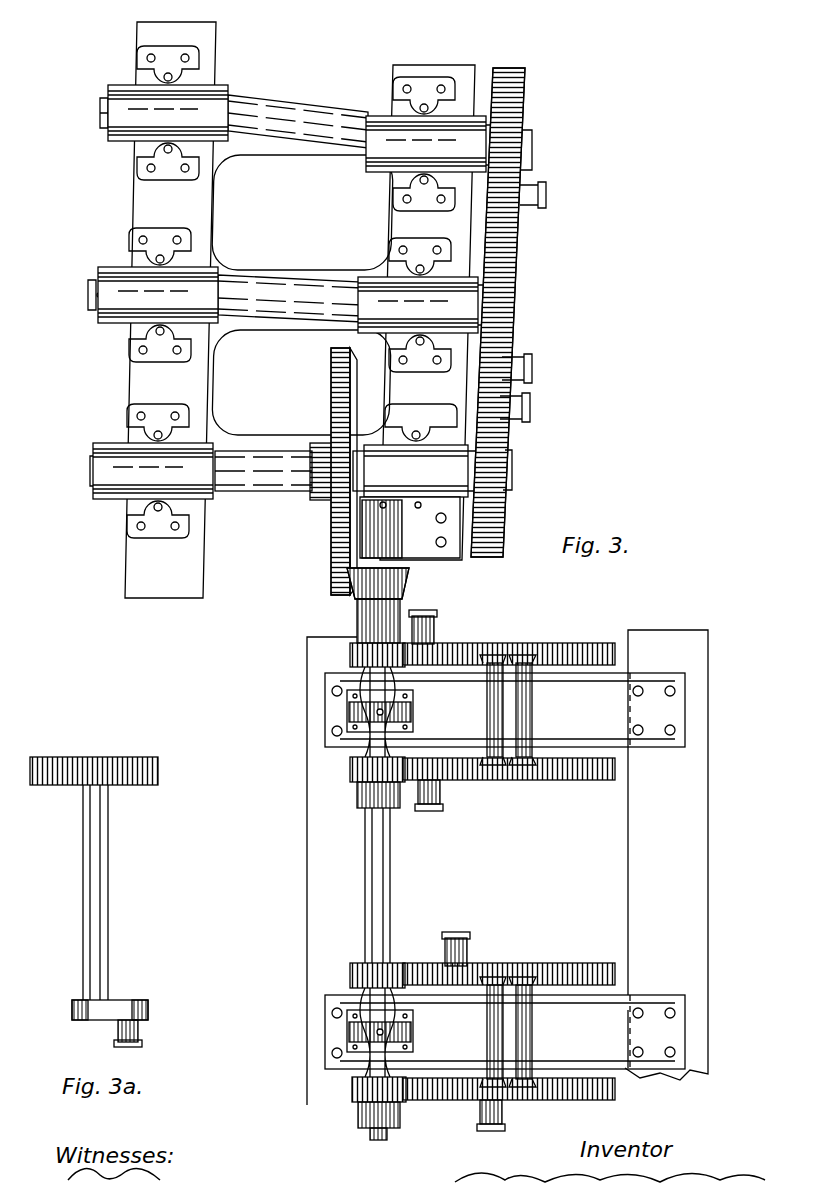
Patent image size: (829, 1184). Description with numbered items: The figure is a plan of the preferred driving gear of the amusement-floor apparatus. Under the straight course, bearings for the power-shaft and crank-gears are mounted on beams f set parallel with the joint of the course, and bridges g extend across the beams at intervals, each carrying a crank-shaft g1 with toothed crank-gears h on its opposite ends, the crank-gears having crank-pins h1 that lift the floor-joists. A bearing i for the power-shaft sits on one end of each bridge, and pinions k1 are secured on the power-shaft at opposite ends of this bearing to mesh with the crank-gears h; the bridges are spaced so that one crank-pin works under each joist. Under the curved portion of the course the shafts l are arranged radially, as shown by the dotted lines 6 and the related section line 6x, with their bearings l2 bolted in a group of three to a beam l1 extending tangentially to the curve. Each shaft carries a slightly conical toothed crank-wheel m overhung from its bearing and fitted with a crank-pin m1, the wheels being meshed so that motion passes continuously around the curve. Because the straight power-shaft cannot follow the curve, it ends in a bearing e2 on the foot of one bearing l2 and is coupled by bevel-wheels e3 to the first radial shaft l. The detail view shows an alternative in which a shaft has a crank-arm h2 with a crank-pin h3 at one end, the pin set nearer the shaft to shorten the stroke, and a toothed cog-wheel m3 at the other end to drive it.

In FIG. 3, the section line 6— 6 is at (728, 472).
In FIG. 3, the section line 6x- 6x is at (750, 838).
In FIG. 3, the shaft l is at (310, 115).
In FIG. 3A, the shaft l is at (110, 860).
In FIG. 3, the beam l1 is at (392, 230).
In FIG. 3, the bearing l2 is at (426, 108).
In FIG. 3, the toothed crank-wheel m is at (524, 88).
In FIG. 3, the crank-pin m1 is at (546, 198).
In FIG. 3A, the toothed cog-wheel m3 is at (94, 755).
In FIG. 3, the bearing e2 is at (385, 540).
In FIG. 3, the bevel-wheels e3 is at (332, 582).
In FIG. 3, the pinion k1 is at (350, 654).
In FIG. 3, the crank-gear h is at (562, 643).
In FIG. 3, the crank-pin h1 is at (437, 628).
In FIG. 3A, the crank-arm h2 is at (136, 1001).
In FIG. 3A, the crank-pin h3 is at (143, 1033).
In FIG. 3, the beam f is at (664, 630).
In FIG. 3, the bridge g is at (614, 874).
In FIG. 3, the crank-shaft g1 is at (540, 693).
In FIG. 3, the bearing i is at (398, 735).